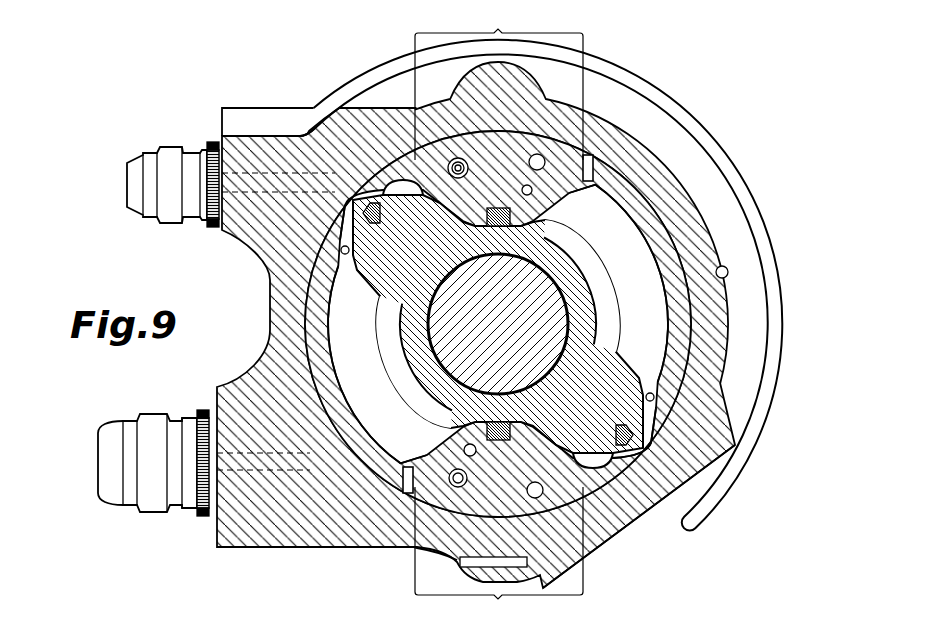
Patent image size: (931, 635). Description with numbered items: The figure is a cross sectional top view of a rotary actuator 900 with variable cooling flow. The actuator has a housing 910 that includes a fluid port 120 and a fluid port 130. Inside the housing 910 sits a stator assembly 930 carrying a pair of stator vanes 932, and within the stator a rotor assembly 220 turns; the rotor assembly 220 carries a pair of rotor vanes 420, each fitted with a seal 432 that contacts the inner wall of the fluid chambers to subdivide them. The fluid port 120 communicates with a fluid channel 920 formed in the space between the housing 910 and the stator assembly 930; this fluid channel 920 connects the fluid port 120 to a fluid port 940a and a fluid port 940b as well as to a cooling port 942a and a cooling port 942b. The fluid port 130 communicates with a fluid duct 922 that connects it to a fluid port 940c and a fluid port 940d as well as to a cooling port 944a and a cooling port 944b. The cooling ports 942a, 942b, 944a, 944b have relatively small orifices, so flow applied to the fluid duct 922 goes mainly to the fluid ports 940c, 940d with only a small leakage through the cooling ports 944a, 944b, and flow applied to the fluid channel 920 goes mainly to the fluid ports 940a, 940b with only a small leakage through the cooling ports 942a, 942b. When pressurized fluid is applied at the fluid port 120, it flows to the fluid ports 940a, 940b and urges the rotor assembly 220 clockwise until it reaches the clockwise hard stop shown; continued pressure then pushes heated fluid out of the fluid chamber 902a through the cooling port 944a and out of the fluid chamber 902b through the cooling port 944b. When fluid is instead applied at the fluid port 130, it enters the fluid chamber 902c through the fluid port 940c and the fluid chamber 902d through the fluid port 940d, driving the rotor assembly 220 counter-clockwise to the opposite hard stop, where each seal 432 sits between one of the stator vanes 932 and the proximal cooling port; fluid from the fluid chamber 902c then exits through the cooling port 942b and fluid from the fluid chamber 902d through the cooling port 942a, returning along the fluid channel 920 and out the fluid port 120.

The rotary actuator 900 is at (184, 105).
The fluid port 130 is at (127, 181).
The fluid port 120 is at (100, 473).
The housing 910 is at (262, 108).
The fluid chamber 902a is at (337, 345).
The fluid chamber 902b is at (660, 296).
The fluid chamber 902c is at (337, 133).
The fluid chamber 902d is at (642, 492).
The fluid channel 920 is at (410, 492).
The fluid duct 922 is at (707, 134).
The stator assembly 930 is at (594, 500).
The stator vanes 932 is at (499, 315).
The fluid port 940a is at (405, 494).
The fluid port 940b is at (658, 135).
The fluid port 940c is at (407, 177).
The fluid port 940d is at (635, 483).
The cooling port 942a is at (628, 220).
The cooling port 942b is at (330, 408).
The cooling port 944a is at (340, 252).
The cooling port 944b is at (665, 392).
The rotor assembly 220 is at (591, 240).
The rotor vanes 420 is at (620, 243).
The seal 432 is at (646, 393).